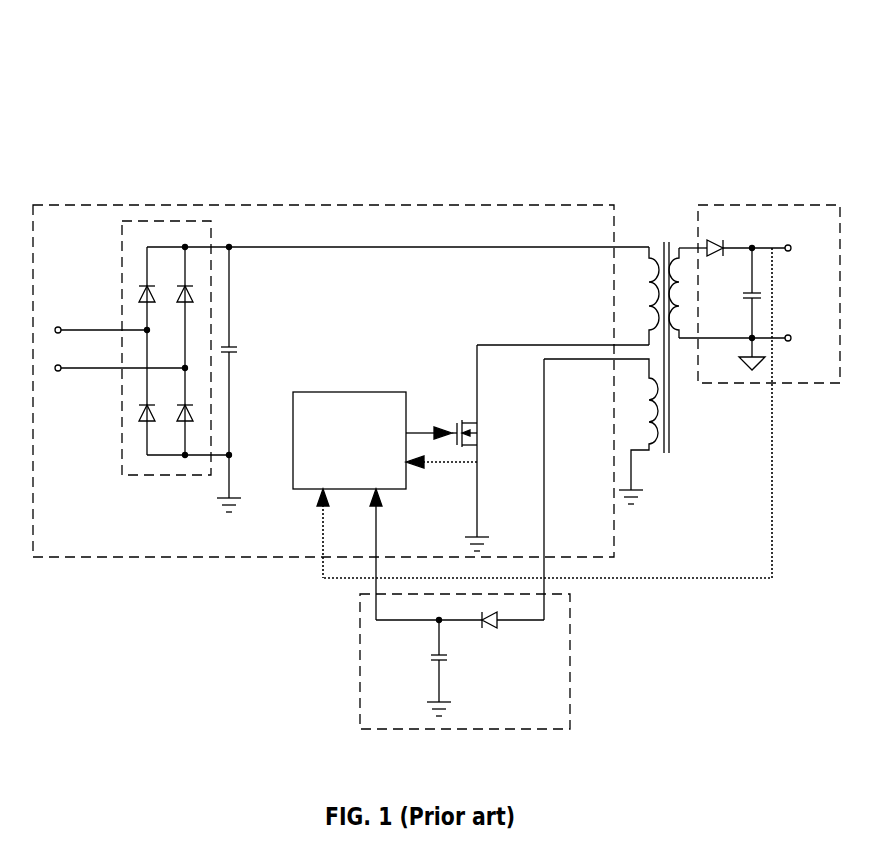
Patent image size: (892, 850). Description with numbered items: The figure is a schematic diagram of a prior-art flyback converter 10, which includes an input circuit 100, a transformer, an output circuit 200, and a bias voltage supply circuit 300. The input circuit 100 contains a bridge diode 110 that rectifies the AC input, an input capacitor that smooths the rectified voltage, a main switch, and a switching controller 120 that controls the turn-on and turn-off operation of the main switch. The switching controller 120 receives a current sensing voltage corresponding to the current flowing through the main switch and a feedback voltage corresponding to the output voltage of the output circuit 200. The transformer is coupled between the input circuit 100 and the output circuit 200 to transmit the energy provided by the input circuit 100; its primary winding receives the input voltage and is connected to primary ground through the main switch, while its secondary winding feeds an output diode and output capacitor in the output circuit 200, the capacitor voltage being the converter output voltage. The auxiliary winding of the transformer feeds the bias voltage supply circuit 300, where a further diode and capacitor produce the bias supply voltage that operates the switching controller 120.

The flyback converter 10 is at (704, 71).
The input circuit 100 is at (303, 205).
The bridge diode 110 is at (121, 261).
The switching controller 120 is at (312, 390).
The output circuit 200 is at (735, 205).
The bias voltage supply circuit 300 is at (570, 672).